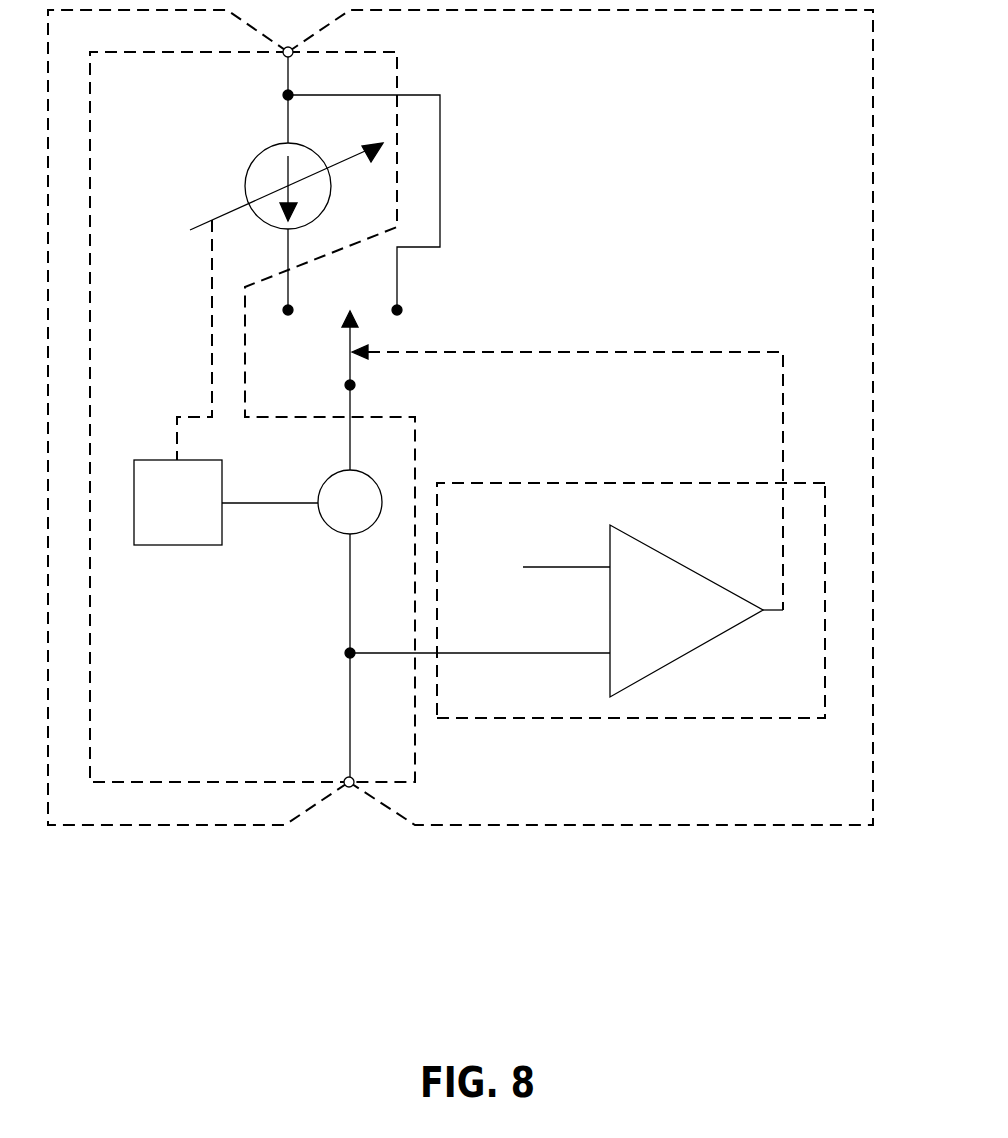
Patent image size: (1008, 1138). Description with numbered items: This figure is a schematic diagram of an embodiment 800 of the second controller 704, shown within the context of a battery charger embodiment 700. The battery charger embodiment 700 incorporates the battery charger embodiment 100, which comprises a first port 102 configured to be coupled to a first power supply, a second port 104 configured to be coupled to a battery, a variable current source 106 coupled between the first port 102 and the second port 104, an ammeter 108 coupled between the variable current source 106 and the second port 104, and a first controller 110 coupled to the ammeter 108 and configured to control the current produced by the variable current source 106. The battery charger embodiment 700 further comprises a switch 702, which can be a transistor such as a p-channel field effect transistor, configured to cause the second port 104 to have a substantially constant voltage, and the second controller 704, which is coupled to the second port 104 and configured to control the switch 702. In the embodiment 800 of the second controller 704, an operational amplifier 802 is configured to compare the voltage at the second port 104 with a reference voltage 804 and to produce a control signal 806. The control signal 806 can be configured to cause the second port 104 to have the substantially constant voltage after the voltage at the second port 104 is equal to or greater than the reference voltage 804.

The embodiment of a battery charger 700 is at (460, 417).
The embodiment of a battery charger 100 is at (252, 417).
The first port 102 is at (286, 58).
The second port 104 is at (342, 788).
The variable current source 106 is at (253, 153).
The ammeter 108 is at (333, 535).
The first controller 110 is at (226, 382).
The switch 702 is at (353, 364).
The second controller 704 is at (631, 600).
The embodiment of second controller 800 is at (631, 600).
The operational amplifier 802 is at (554, 611).
The reference voltage 804 is at (540, 570).
The control signal 806 is at (590, 352).